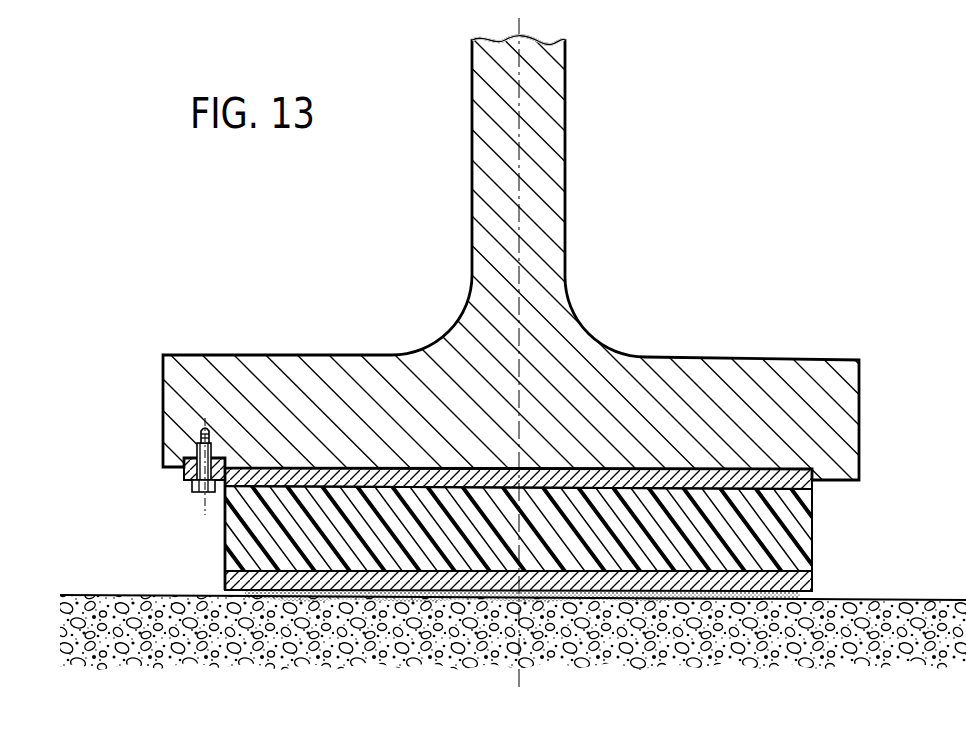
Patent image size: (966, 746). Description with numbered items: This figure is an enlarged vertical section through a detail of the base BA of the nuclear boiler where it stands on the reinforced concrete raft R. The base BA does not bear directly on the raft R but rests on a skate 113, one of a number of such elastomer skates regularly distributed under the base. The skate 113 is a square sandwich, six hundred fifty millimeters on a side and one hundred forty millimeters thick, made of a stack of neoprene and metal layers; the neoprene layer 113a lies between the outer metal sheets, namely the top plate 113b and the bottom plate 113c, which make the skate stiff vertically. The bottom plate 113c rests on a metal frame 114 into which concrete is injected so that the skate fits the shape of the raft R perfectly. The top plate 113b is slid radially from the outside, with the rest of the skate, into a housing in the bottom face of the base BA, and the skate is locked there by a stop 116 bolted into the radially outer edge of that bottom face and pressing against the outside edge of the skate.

The base BA is at (553, 258).
The raft R is at (105, 595).
The skate 113 is at (506, 529).
The intermediate layer of pad 113a is at (775, 535).
The top plate 113b is at (788, 483).
The bottom plate 113c is at (790, 584).
The metal frame 114 is at (226, 590).
The stop 116 is at (185, 479).